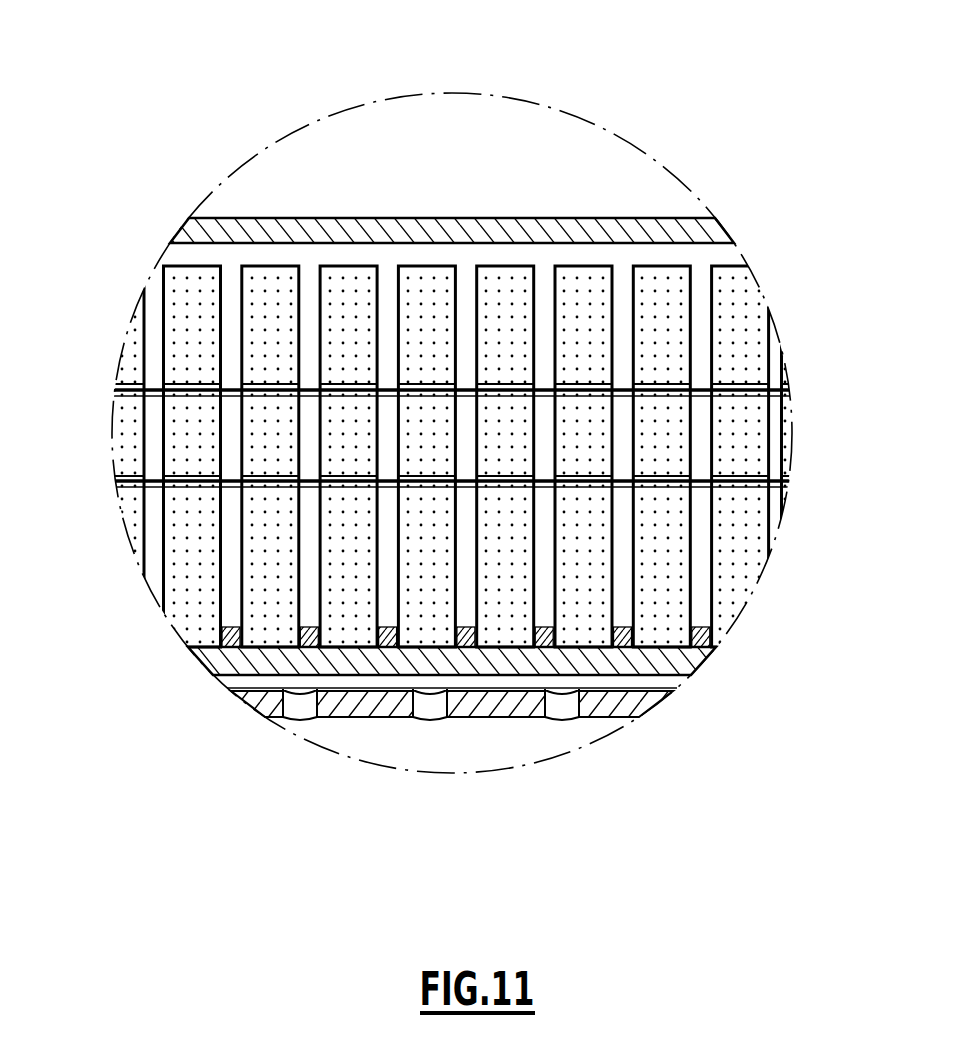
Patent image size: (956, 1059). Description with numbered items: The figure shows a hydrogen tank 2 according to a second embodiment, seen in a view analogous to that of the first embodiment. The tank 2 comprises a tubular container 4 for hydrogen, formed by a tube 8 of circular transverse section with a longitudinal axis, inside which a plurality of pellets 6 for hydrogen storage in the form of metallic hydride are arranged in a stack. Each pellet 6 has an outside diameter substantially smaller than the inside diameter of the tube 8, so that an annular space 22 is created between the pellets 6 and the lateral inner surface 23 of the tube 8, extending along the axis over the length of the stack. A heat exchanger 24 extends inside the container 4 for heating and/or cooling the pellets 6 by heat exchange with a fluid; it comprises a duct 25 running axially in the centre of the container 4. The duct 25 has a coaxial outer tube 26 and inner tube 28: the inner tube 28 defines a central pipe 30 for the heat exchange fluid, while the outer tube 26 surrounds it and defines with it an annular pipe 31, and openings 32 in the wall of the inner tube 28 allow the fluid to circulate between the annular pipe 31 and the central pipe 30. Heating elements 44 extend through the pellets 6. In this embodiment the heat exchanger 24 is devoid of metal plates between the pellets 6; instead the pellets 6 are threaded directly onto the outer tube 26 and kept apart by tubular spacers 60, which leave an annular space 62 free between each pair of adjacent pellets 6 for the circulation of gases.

The tank 2 is at (276, 86).
The container 4 is at (452, 188).
The pellets 6 is at (665, 310).
The tube 8 is at (514, 240).
The annular space 22 is at (341, 256).
The lateral inner surface 23 is at (250, 246).
The heat exchanger 24 is at (570, 871).
The duct 25 is at (696, 786).
The outer tube 26 is at (670, 657).
The inner tube 28 is at (625, 703).
The central pipe 30 is at (358, 737).
The annular pipe 31 is at (227, 681).
The openings 32 is at (297, 712).
The heating elements 44 is at (788, 390).
The tubular spacers 60 is at (304, 628).
The annular space 62 is at (232, 352).